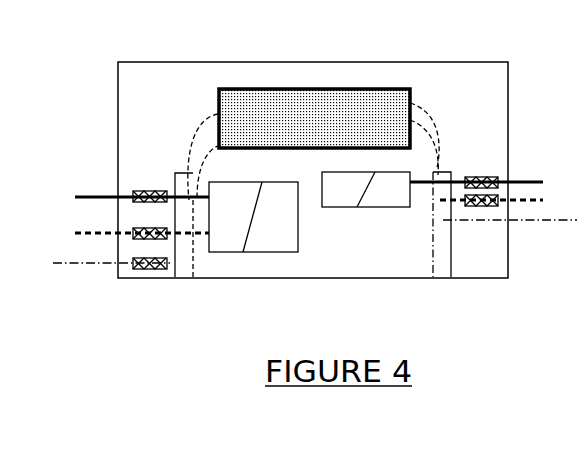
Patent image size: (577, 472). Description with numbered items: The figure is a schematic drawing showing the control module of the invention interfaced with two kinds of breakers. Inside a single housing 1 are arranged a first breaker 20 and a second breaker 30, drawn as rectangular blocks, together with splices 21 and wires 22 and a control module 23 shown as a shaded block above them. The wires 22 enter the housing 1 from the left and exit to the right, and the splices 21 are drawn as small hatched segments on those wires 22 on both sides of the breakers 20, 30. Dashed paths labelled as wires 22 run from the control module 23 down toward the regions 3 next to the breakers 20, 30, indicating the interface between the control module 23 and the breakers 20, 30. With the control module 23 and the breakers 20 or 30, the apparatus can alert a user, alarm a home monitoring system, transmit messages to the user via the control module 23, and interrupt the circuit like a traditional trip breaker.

The housing 1 is at (478, 63).
The shielding / isolation region 3 is at (194, 275).
The breaker 20 is at (277, 252).
The splices 21 is at (150, 191).
The wires 22 is at (319, 151).
The control module 23 is at (372, 88).
The breaker 30 is at (363, 207).